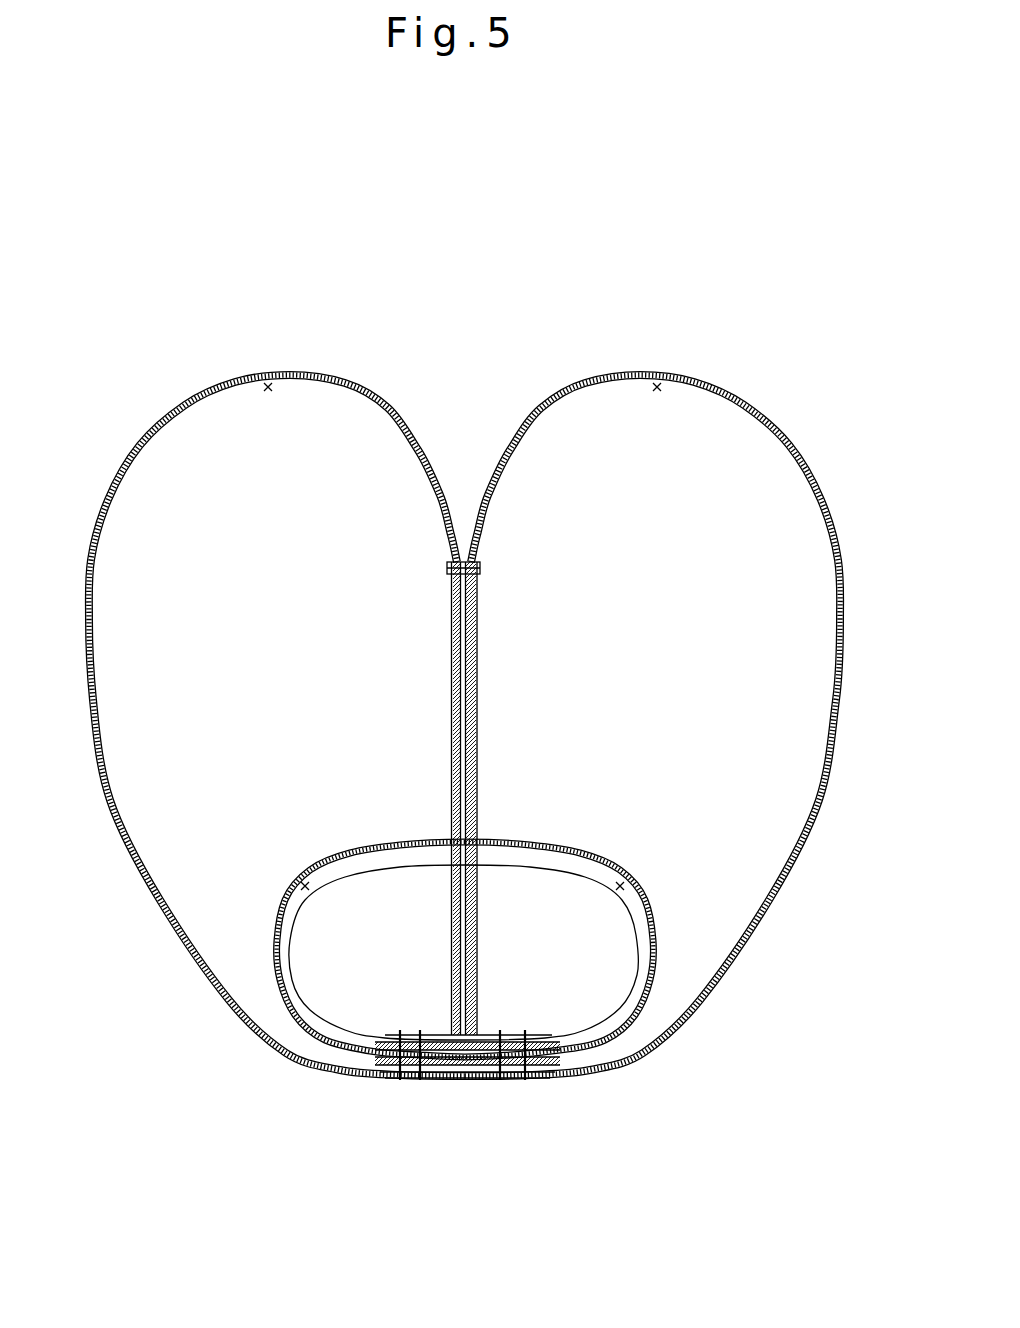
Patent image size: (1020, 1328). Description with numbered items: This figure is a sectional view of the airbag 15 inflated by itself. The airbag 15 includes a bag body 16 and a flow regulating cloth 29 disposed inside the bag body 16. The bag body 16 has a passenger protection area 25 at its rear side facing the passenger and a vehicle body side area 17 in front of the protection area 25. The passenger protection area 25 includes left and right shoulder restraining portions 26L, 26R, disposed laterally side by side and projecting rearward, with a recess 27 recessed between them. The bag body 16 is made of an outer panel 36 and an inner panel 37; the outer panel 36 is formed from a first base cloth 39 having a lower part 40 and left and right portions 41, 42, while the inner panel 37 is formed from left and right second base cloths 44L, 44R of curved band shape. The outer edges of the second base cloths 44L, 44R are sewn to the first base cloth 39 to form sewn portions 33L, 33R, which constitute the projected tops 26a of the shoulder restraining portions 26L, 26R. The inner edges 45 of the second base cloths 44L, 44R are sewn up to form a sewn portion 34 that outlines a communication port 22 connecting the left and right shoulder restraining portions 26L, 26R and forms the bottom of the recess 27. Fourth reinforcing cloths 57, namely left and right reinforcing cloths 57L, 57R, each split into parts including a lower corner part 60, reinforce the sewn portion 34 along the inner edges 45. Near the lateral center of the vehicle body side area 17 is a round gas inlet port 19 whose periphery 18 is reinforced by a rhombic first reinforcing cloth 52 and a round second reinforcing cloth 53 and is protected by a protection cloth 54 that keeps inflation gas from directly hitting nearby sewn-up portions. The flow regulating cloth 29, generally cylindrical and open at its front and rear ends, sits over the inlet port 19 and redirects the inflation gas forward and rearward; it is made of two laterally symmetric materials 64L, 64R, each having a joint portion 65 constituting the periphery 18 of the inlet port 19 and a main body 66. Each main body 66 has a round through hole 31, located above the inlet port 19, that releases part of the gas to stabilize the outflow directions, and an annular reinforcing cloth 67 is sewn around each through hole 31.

The airbag 15 is at (247, 530).
The bag body 16 is at (330, 395).
The vehicle body side area 17 is at (700, 1032).
The periphery of gas inlet port 18 is at (397, 1073).
The gas inlet port 19 is at (463, 1082).
The communication port 22 is at (493, 772).
The passenger protection area 25 is at (475, 693).
The right shoulder restraining portion 26R is at (245, 360).
The left shoulder restraining portion 26L is at (684, 362).
The projected tops 26a is at (479, 491).
The recess 27 is at (462, 488).
The flow regulating cloth 29 is at (340, 832).
The through holes 31 is at (303, 883).
The right sewn portion 33R is at (270, 394).
The left sewn portion 33L is at (661, 394).
The sewn portion 34 is at (478, 565).
The outer panel 36 is at (233, 1027).
The inner panel 37 is at (534, 263).
The first base cloth 39 is at (214, 1157).
The lower part 40 is at (563, 1080).
The left portion 41 is at (818, 805).
The right portion 42 is at (108, 805).
The right second base cloth 44R is at (390, 405).
The left second base cloth 44L is at (535, 405).
The inner edges 45 is at (447, 570).
The first reinforcing cloth 52 is at (415, 1073).
The second reinforcing cloth 53 is at (515, 1033).
The protection cloth 54 is at (550, 1037).
The fourth reinforcing cloths 57 is at (493, 798).
The left fourth reinforcing cloth 57L is at (480, 612).
The right fourth reinforcing cloth 57R is at (450, 638).
The lower corner part 60 is at (655, 962).
The right material for flow regulating cloth 64R is at (390, 838).
The left material for flow regulating cloth 64L is at (540, 838).
The joint portion 65 is at (401, 1073).
The main body 66 is at (330, 860).
The reinforcing cloth 67 is at (327, 880).